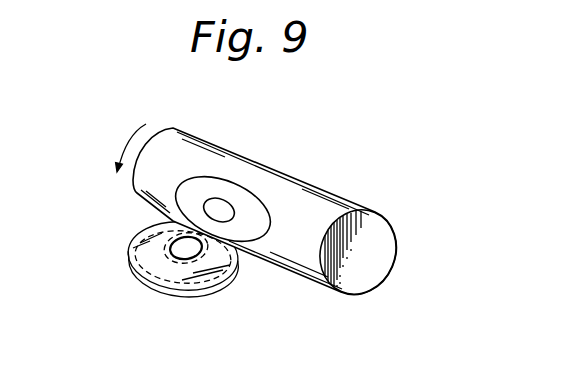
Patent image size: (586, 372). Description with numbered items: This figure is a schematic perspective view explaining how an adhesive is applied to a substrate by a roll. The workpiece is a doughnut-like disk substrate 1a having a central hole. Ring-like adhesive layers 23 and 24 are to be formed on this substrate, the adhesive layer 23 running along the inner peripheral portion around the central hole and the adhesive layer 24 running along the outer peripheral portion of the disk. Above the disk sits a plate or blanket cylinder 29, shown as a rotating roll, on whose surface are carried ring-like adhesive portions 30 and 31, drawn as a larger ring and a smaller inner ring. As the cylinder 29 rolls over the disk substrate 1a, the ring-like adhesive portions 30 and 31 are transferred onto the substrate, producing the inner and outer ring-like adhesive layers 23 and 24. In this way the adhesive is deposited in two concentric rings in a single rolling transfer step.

The disk substrate 1a is at (202, 286).
The ring-like adhesive layer 23 is at (176, 285).
The ring-like adhesive layer 24 is at (140, 269).
The plate or blanket cylinder 29 is at (353, 205).
The ring-like adhesive portion 30 is at (272, 197).
The ring-like adhesive portion 31 is at (223, 199).